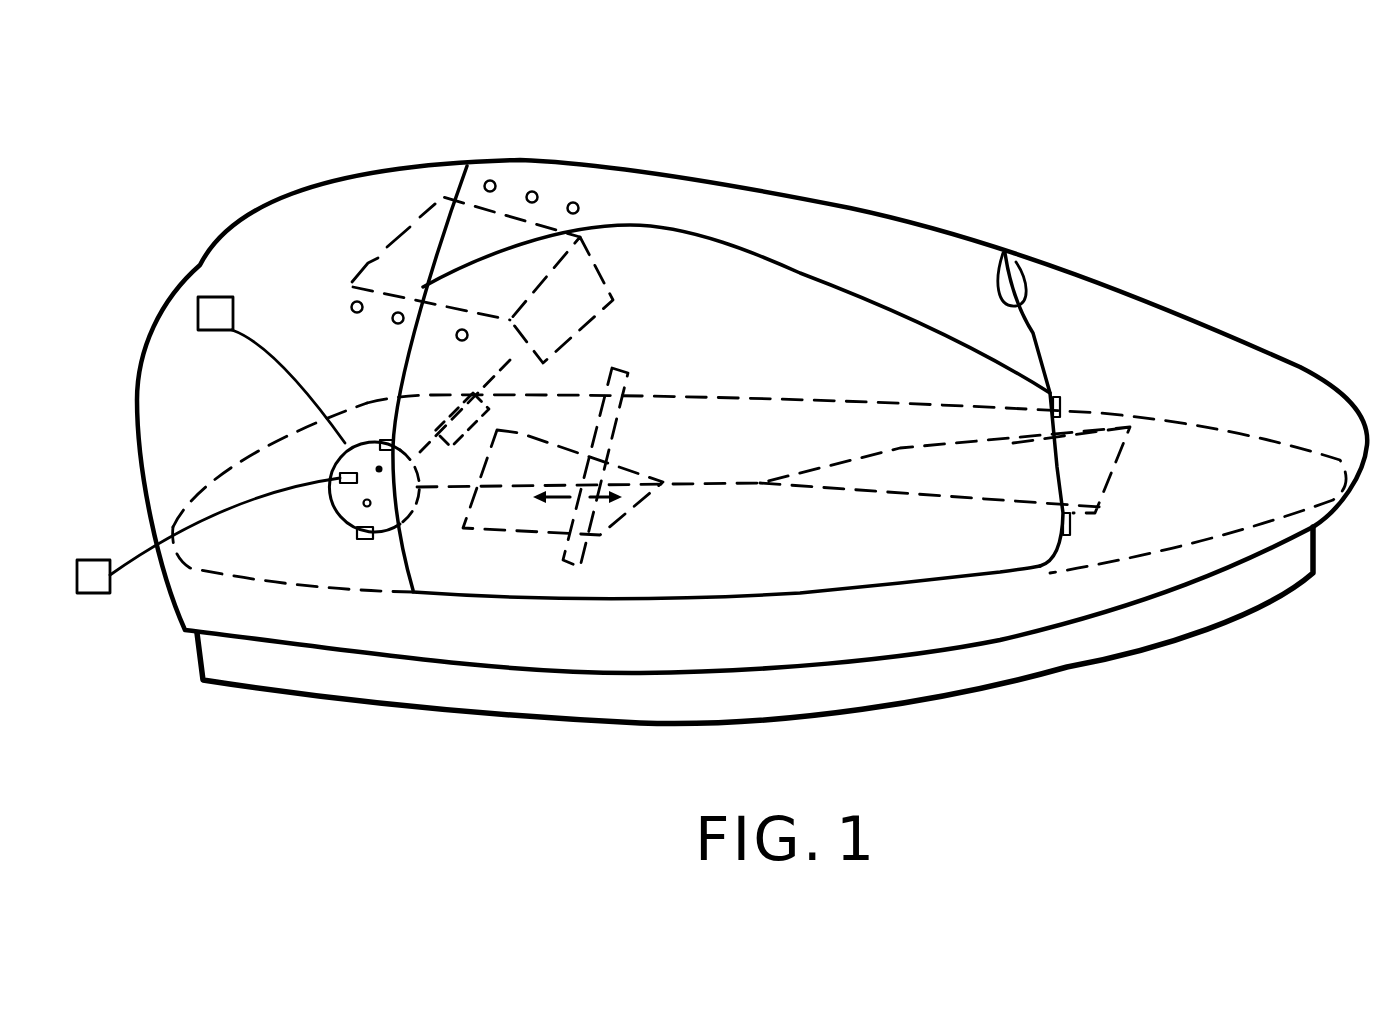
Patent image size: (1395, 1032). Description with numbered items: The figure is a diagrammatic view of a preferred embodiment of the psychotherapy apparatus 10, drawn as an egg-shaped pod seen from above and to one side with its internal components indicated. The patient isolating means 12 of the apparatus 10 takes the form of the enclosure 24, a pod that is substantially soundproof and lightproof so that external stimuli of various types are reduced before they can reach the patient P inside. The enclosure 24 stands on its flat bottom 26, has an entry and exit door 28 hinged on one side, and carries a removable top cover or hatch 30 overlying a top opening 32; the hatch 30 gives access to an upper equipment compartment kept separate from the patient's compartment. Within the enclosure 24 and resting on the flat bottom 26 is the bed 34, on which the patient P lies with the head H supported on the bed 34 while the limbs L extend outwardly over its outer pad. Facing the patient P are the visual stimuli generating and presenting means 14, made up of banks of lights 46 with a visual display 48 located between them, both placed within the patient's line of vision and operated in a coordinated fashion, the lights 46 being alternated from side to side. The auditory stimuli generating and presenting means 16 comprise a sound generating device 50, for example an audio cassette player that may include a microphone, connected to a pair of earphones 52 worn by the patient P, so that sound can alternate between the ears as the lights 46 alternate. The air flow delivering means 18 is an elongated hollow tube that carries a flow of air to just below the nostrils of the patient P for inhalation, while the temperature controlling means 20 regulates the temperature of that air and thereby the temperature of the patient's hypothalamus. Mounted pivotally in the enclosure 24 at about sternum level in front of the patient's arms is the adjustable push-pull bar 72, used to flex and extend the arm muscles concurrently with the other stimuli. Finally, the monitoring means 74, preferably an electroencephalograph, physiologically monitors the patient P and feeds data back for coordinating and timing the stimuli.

The psychotherapy apparatus 10 is at (1045, 153).
The patient isolating means 12 is at (1225, 311).
The visual stimuli generating and presenting means 14 is at (472, 172).
The auditory stimuli generating and presenting means 16 is at (392, 234).
The air flow delivering means 18 is at (512, 370).
The temperature controlling means 20 is at (600, 278).
The enclosure 24 is at (1310, 363).
The flat bottom 26 is at (1150, 623).
The entry and exit door 28 is at (813, 577).
The hatch 30 is at (840, 224).
The top opening 32 is at (1024, 262).
The bed 34 is at (236, 460).
The banks of lights 46 is at (572, 202).
The visual display 48 is at (360, 263).
The sound generating device 50 is at (212, 297).
The earphones 52 is at (340, 460).
The push-pull bar 72 is at (623, 367).
The monitoring means 74 is at (90, 597).
The patient P is at (660, 460).
The head H is at (335, 503).
The limbs L is at (993, 530).